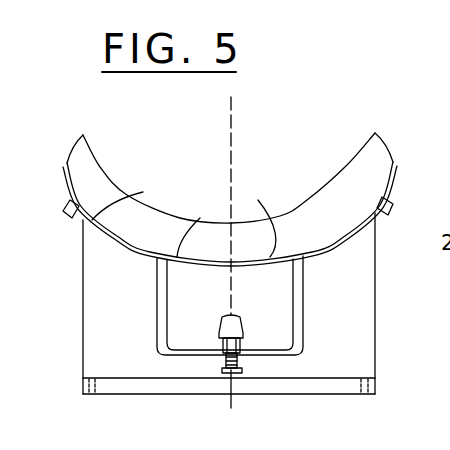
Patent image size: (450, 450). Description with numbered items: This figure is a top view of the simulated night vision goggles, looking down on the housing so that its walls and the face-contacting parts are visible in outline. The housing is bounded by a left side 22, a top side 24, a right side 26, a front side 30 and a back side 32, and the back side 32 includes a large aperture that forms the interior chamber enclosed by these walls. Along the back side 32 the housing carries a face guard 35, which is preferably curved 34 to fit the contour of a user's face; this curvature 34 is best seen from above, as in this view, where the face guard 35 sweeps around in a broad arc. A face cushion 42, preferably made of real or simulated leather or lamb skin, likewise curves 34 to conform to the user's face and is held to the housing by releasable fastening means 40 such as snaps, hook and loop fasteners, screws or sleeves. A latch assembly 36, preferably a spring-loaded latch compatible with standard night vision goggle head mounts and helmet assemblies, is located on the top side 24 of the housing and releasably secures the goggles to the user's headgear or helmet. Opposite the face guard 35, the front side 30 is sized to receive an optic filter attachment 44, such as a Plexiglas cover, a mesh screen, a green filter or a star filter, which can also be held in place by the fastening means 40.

The left side 22 is at (83, 333).
The top side 24 is at (352, 274).
The right side 26 is at (375, 320).
The front side 30 is at (323, 380).
The back side 32 is at (200, 218).
The curve 34 is at (258, 200).
The face guard 35 is at (143, 192).
The latch assembly 36 is at (240, 352).
The releasable fastening means 40 is at (68, 210).
The face cushion 42 is at (93, 163).
The optic filter attachment 44 is at (150, 394).